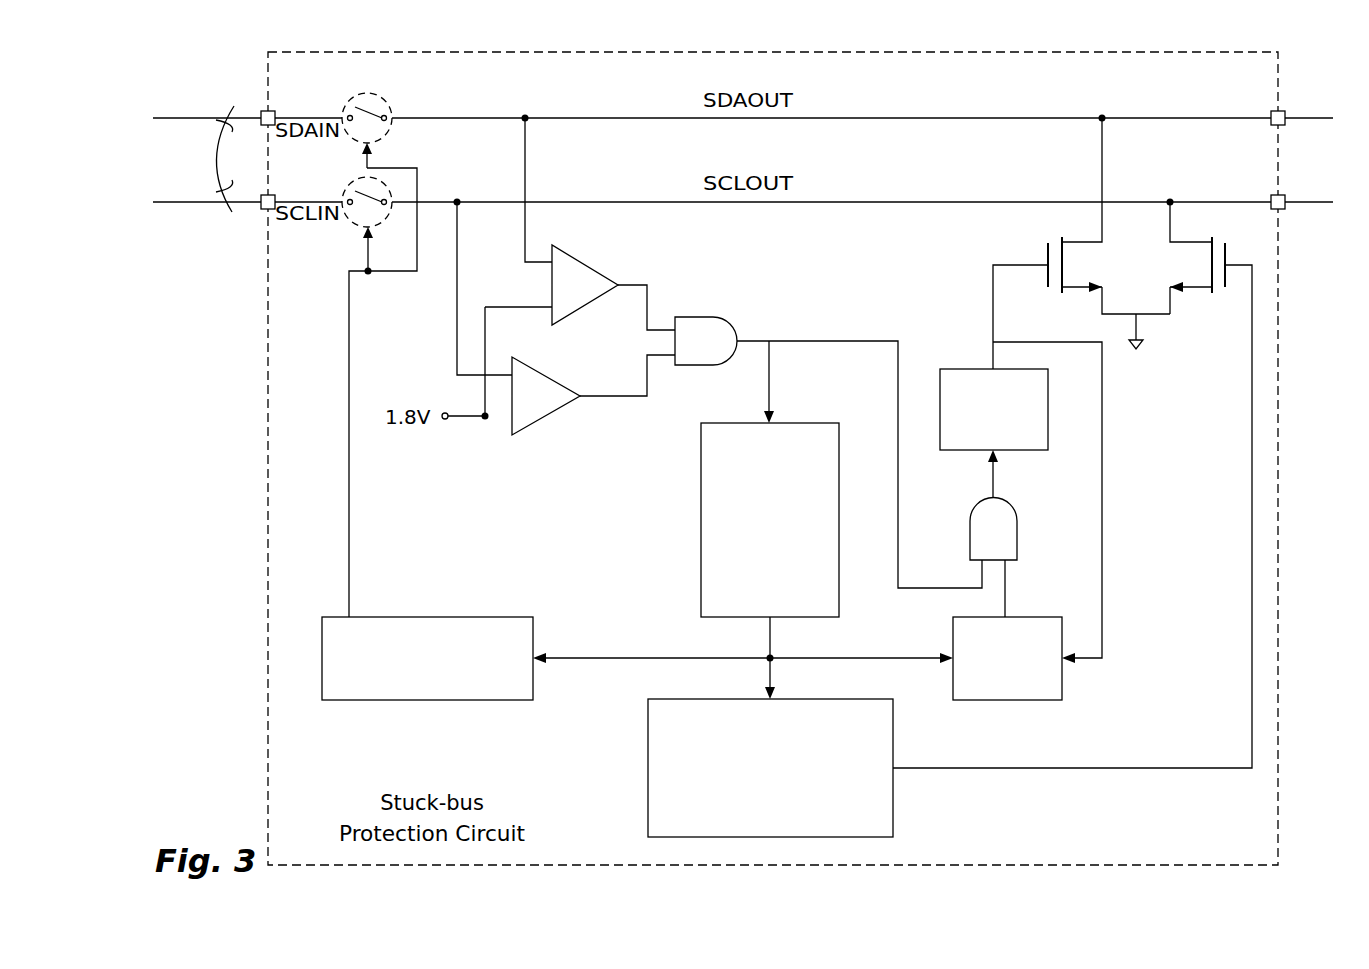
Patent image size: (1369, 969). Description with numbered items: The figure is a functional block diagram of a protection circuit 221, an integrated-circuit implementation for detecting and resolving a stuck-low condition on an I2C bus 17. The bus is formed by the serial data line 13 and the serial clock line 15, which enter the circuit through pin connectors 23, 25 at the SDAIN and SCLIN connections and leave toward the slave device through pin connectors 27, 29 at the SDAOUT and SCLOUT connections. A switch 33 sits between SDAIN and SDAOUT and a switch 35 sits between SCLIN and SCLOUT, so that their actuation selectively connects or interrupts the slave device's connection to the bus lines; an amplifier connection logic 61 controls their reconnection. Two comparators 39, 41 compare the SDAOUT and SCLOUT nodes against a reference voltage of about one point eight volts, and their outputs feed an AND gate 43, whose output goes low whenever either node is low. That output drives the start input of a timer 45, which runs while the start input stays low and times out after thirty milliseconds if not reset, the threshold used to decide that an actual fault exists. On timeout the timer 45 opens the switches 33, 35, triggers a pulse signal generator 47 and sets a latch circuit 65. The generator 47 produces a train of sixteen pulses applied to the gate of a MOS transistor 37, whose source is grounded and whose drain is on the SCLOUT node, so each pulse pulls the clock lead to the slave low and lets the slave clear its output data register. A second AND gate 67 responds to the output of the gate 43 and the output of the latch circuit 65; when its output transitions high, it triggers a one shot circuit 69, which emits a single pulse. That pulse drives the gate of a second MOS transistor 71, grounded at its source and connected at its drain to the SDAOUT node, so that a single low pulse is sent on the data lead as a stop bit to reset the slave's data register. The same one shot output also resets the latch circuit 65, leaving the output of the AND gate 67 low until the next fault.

The serial data line 13 is at (176, 116).
The serial clock line 15 is at (172, 205).
The inter-integrated circuit bus 17 is at (221, 115).
The pin connector 23 is at (276, 110).
The pin connector 25 is at (276, 194).
The pin connector 27 is at (1272, 112).
The pin connector 29 is at (1272, 196).
The switch 33 is at (389, 104).
The switch 35 is at (353, 226).
The MOS transistor 37 is at (1228, 254).
The comparator 39 is at (598, 267).
The comparator 41 is at (556, 378).
The AND gate 43 is at (733, 318).
The timer 45 is at (840, 519).
The pulse signal generator 47 is at (893, 742).
The amplifier connection logic 61 is at (322, 656).
The latch circuit 65 is at (1032, 616).
The AND gate 67 is at (1018, 533).
The one shot circuit 69 is at (1050, 408).
The MOS transistor 71 is at (1047, 257).
The protection circuit 221 is at (268, 752).